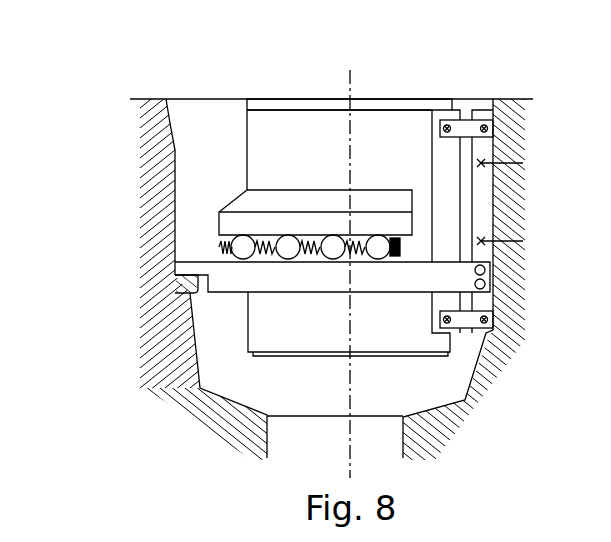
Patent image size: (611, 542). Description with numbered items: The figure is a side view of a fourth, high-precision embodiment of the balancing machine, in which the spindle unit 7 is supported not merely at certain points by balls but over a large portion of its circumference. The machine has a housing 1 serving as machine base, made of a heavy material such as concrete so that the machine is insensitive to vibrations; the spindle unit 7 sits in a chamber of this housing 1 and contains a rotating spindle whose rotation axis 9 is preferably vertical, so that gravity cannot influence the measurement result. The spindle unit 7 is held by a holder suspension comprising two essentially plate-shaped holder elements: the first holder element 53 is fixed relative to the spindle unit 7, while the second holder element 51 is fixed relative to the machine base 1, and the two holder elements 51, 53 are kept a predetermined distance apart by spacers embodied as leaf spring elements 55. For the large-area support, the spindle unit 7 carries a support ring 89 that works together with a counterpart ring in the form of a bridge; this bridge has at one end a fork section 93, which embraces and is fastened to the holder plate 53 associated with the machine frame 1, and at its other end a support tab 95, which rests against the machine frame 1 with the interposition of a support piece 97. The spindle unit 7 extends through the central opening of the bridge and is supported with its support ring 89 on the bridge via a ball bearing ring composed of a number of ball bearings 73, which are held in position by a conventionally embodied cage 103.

The housing 1 is at (192, 386).
The spindle unit 7 is at (240, 129).
The rotation axis 9 is at (350, 432).
The second holder element 51 is at (480, 150).
The first holder element 53 is at (447, 197).
The leaf spring elements 55 is at (463, 121).
The ball bearings 73 is at (318, 252).
The support ring 89 is at (445, 215).
The fork section 93 is at (460, 252).
The support tab 95 is at (175, 262).
The support piece 97 is at (182, 283).
The cage 103 is at (222, 240).